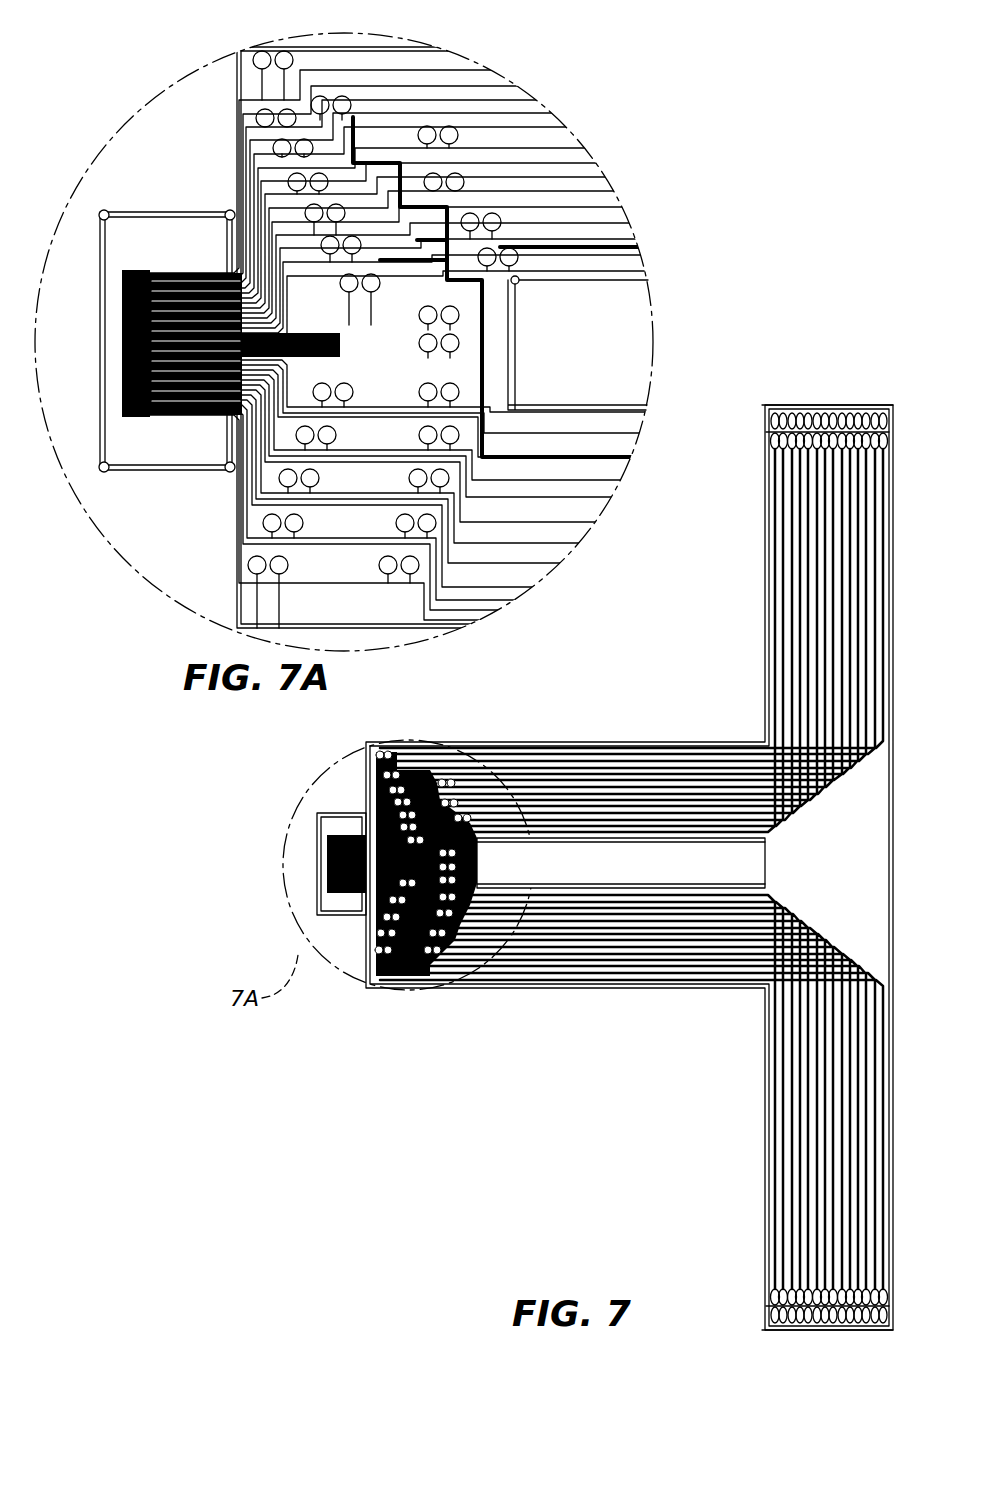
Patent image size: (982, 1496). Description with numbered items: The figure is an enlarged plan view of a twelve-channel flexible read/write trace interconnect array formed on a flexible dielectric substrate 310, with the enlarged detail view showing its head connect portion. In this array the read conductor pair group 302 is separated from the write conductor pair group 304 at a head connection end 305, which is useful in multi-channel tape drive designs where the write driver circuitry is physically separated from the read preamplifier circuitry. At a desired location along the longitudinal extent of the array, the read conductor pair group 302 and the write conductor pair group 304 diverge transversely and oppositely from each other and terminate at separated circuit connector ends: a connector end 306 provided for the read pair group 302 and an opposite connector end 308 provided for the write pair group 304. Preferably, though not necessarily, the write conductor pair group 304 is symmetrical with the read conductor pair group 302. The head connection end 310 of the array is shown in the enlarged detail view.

In FIG. 7, the read conductor pair group 302 is at (540, 736).
In FIG. 7, the write conductor pair group 304 is at (542, 994).
In FIG. 7A, the head connection end 305 is at (122, 350).
In FIG. 7, the head connection end 305 is at (318, 858).
In FIG. 7, the circuit connector end 306 is at (840, 404).
In FIG. 7, the circuit connector end 308 is at (757, 1309).
In FIG. 7A, the flexible dielectric substrate 310 is at (640, 360).
In FIG. 7, the flexible dielectric substrate 310 is at (628, 868).